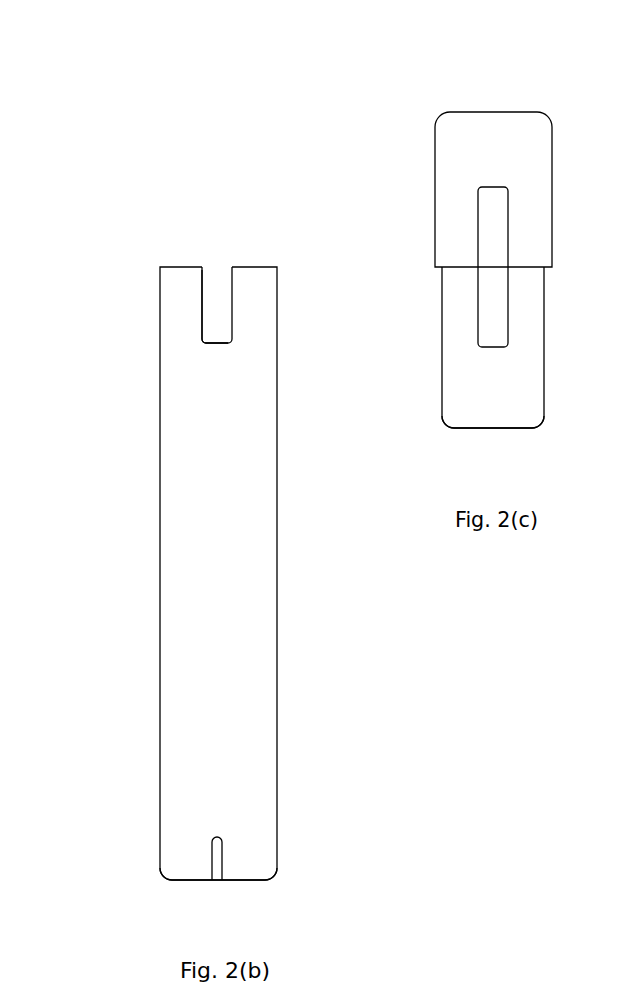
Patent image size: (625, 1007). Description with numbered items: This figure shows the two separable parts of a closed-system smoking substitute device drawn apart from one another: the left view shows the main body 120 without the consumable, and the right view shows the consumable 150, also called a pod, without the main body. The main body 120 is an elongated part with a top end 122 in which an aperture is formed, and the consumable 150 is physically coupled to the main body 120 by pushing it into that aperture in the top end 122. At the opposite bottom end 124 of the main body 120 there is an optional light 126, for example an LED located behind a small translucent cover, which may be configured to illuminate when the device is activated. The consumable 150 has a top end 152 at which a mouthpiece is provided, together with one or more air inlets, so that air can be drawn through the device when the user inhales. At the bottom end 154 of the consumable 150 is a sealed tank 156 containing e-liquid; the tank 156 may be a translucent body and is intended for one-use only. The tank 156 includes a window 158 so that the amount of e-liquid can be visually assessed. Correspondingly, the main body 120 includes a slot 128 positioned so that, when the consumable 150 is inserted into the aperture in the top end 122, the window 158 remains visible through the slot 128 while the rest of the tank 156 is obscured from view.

In FIG. 2B, the main body 120 is at (160, 590).
In FIG. 2B, the top end 122 is at (221, 262).
In FIG. 2B, the bottom end 124 is at (236, 883).
In FIG. 2B, the light 126 is at (210, 860).
In FIG. 2B, the slot 128 is at (215, 303).
In FIG. 2C, the consumable 150 is at (443, 256).
In FIG. 2C, the top end 152 is at (502, 99).
In FIG. 2C, the bottom end 154 is at (505, 433).
In FIG. 2C, the tank 156 is at (483, 393).
In FIG. 2C, the window 158 is at (498, 245).